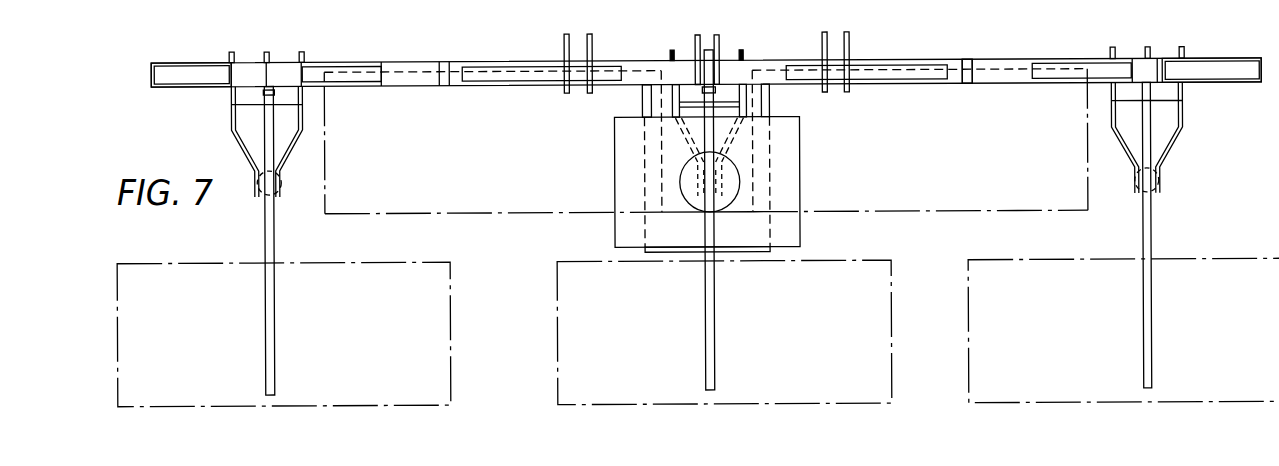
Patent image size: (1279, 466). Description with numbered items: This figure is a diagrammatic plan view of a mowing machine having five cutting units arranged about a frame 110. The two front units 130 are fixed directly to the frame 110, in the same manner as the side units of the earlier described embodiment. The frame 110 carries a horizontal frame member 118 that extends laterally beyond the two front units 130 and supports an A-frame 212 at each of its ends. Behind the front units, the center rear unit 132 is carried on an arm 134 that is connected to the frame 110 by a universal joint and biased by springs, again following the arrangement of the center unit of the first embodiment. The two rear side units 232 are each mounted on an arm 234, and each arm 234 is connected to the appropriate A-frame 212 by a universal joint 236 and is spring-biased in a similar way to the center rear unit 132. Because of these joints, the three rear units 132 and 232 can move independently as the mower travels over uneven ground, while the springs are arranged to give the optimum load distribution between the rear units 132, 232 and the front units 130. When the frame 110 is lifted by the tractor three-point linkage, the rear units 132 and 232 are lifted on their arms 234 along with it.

The frame 110 is at (741, 70).
The horizontal frame member 118 is at (968, 62).
The A-frame 212 is at (190, 77).
The universal joint 236 is at (273, 203).
The arm 234 is at (274, 323).
The front unit 130 is at (520, 202).
The center rear unit 132 is at (607, 404).
The arm 134 is at (715, 322).
The rear side unit 232 is at (402, 405).